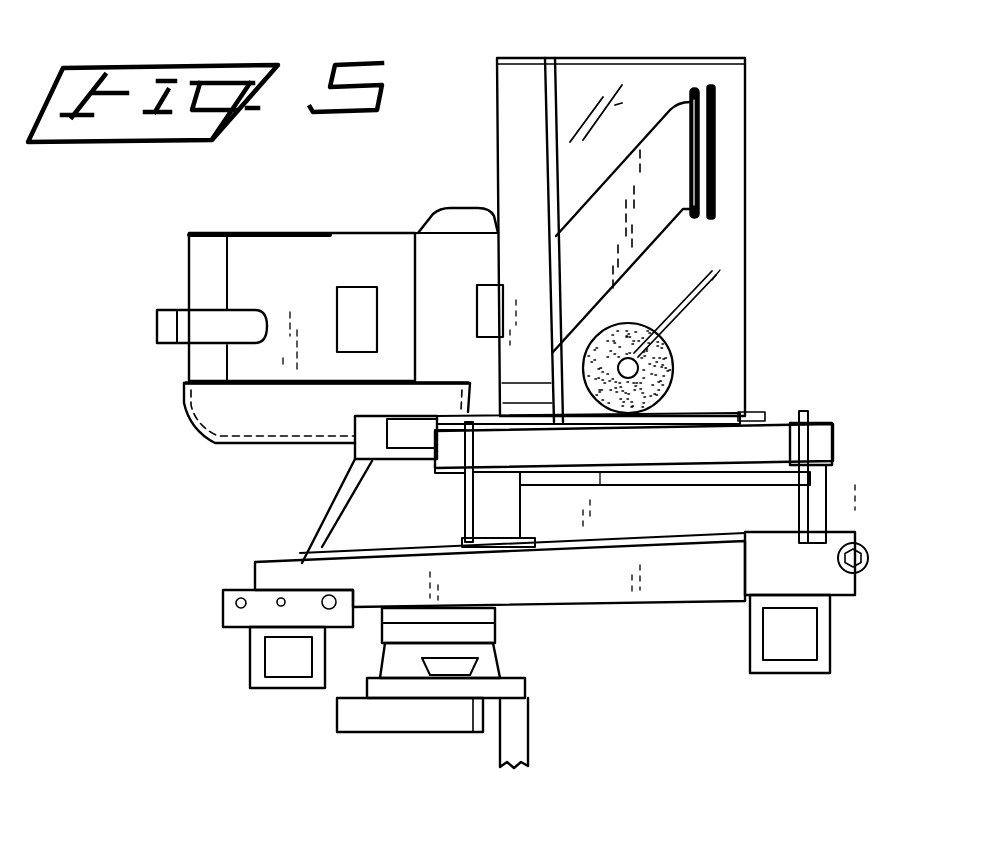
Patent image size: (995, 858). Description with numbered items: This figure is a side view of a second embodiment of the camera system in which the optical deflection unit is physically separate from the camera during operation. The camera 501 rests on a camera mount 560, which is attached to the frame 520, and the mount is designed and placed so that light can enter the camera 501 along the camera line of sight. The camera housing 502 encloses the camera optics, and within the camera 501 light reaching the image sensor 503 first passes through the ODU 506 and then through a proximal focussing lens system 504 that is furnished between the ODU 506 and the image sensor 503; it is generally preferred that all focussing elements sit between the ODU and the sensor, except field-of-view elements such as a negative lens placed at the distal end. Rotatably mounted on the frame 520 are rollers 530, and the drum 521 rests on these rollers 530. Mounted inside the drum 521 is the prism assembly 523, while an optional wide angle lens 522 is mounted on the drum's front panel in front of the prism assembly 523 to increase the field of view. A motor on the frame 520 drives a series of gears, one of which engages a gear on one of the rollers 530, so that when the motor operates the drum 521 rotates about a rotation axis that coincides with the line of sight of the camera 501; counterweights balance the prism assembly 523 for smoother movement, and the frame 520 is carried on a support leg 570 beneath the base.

The camera 501 is at (245, 365).
The motor 502 is at (263, 257).
The image sensor 503 is at (338, 350).
The proximal focussing lens system 504 is at (475, 286).
The ODU 506 is at (757, 328).
The frame 520 is at (612, 580).
The drum 521 is at (673, 72).
The wide angle lens 522 is at (718, 168).
The prism assembly 523 is at (660, 210).
The rollers 530 is at (753, 435).
The camera mount 560 is at (353, 448).
The mounting leg 570 is at (528, 705).